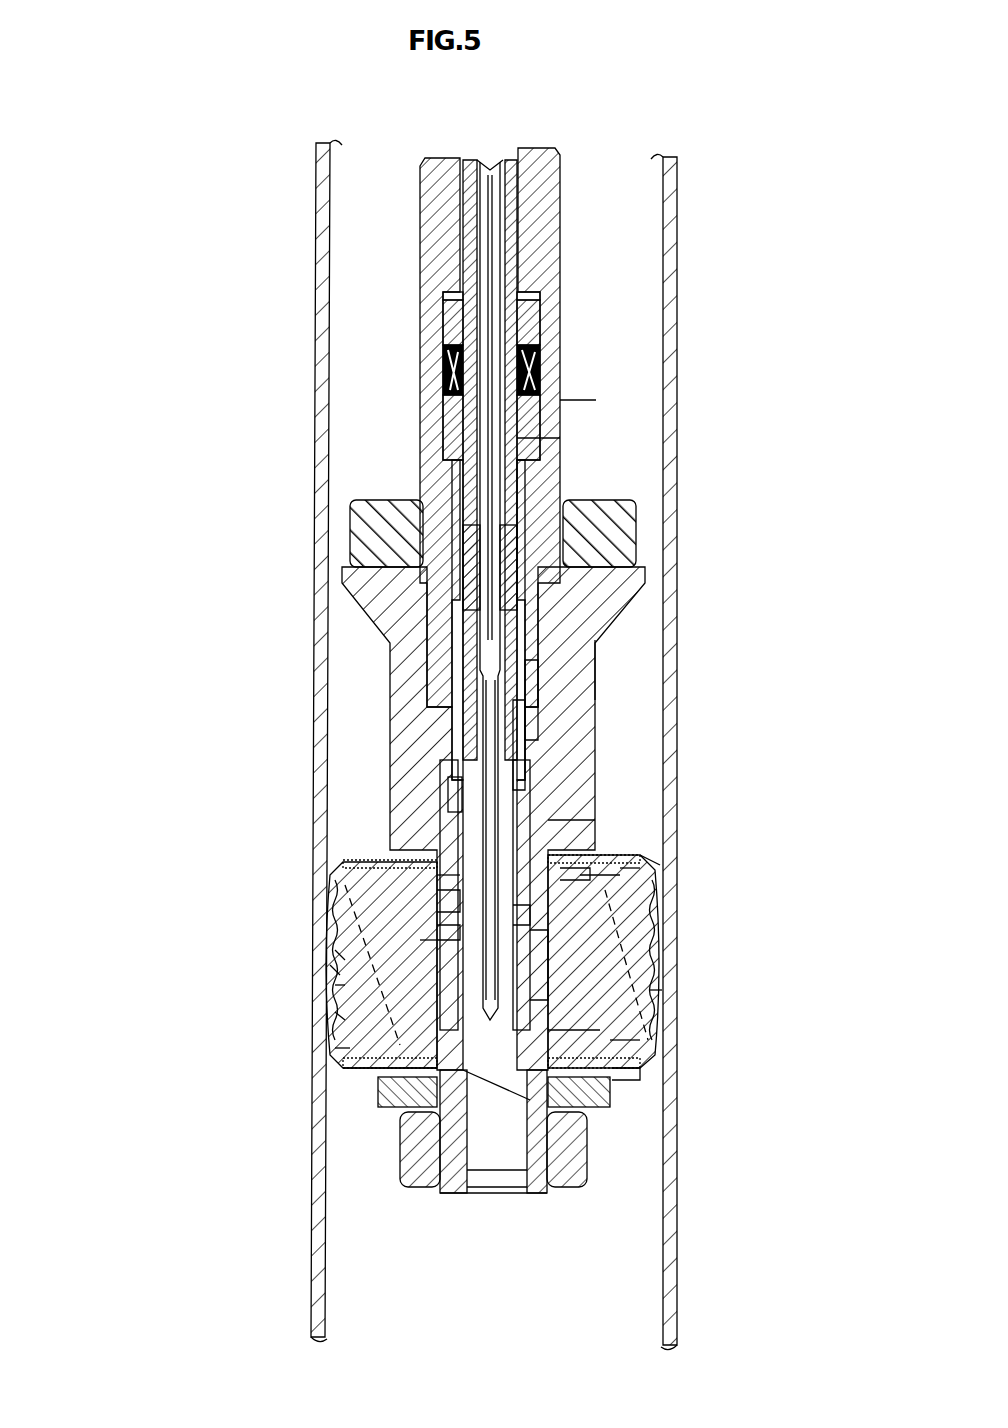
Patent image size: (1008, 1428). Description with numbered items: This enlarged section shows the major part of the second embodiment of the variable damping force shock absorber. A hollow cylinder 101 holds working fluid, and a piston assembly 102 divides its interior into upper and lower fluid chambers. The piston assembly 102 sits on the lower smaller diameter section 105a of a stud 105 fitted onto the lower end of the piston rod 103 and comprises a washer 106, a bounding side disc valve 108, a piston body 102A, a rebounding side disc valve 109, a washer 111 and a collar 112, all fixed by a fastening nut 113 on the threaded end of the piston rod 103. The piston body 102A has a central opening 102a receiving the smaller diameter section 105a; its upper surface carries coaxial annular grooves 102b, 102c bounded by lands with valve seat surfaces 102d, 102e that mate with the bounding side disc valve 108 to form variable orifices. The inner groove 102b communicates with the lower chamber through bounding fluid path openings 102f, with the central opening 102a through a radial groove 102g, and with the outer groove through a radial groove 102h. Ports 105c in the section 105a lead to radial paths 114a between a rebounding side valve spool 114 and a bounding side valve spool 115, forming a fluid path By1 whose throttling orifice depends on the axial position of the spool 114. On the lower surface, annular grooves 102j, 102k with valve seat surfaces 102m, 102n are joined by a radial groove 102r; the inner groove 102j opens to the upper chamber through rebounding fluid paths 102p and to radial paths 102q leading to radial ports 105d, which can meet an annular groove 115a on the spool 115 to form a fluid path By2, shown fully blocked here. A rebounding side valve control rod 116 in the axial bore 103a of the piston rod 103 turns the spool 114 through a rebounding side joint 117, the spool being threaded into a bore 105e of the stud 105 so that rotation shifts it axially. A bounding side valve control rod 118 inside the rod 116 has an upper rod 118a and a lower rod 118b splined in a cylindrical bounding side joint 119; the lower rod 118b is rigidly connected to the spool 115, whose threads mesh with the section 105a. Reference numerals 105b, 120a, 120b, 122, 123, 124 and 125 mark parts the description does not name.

The hollow cylinder 101 is at (678, 178).
The piston assembly 102 is at (677, 968).
The piston body 102A is at (335, 968).
The central opening 102a is at (437, 942).
The inner annular groove 102b is at (600, 882).
The outer annular groove 102c is at (560, 866).
The valve seat surface 102d is at (595, 860).
The valve seat surface 102e is at (630, 862).
The bounding fluid path opening 102f is at (660, 990).
The radial groove 102g is at (645, 852).
The radial groove 102h is at (437, 878).
The inner annular groove 102j is at (337, 1015).
The outer annular groove 102k is at (338, 1048).
The valve seat surface 102m is at (350, 1092).
The valve seat surface 102n is at (345, 1072).
The rebounding fluid path 102p is at (340, 955).
The radial path 102q is at (337, 985).
The radial groove 102r is at (610, 1080).
The piston rod 103 is at (418, 222).
The axial bore 103a is at (596, 407).
The stud 105 is at (389, 655).
The lower smaller diameter section 105a is at (437, 930).
The housing portion 105b is at (598, 645).
The port 105c is at (560, 822).
The radial port 105d is at (560, 1100).
The bore 105e is at (615, 1040).
The washer 106 is at (430, 838).
The bounding side disc valve 108 is at (440, 898).
The rebounding side disc valve 109 is at (640, 1075).
The washer 111 is at (395, 1125).
The collar 112 is at (420, 1120).
The fastening nut 113 is at (417, 1172).
The rebounding side valve spool 114 is at (440, 760).
The radial path 114a is at (532, 915).
The bounding side valve spool 115 is at (548, 936).
The annular groove 115a is at (600, 1032).
The rebounding side valve control rod 116 is at (510, 228).
The rebounding side joint 117 is at (452, 432).
The bounding side valve control rod 118 is at (490, 276).
The upper rod 118a is at (560, 438).
The lower rod 118b is at (525, 745).
The bounding side joint 119 is at (538, 700).
The packing 120a is at (443, 322).
The nut 120b is at (628, 522).
The cap 122 is at (443, 296).
The seal 123 is at (443, 372).
The seal 124 is at (468, 580).
The nut 125 is at (360, 522).
The fluid path By1 is at (340, 878).
The fluid path By2 is at (600, 1045).